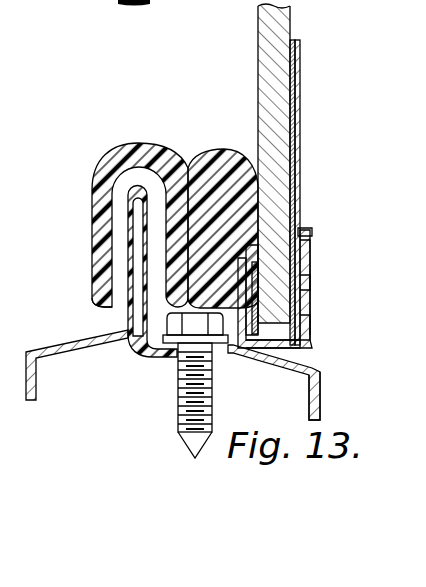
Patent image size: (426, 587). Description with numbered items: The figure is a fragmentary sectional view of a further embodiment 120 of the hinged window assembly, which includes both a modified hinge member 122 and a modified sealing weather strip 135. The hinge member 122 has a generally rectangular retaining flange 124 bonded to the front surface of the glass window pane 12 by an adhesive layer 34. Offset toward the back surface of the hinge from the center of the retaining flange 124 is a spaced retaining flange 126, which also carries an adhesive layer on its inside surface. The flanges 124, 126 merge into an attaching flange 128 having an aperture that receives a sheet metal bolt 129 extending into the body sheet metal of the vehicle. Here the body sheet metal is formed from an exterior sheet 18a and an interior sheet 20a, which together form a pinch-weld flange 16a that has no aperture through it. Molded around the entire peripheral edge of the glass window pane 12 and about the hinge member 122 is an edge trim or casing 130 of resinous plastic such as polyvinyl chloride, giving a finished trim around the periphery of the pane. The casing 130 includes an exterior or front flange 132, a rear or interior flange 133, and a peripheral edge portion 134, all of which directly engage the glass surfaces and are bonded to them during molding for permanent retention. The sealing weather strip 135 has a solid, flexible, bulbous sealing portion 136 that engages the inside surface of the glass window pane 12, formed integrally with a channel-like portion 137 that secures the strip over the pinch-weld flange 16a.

The glass window pane 12 is at (258, 32).
The adhesive layer 34 is at (300, 45).
The retaining flange 124 is at (300, 82).
The embodiment of the hinged window assembly 120 is at (365, 108).
The hinge member 122 is at (304, 206).
The spaced retaining flange 126 is at (252, 290).
The exterior or front flange 132 is at (312, 282).
The edge trim or casing 130 is at (312, 298).
The rear or interior flange 133 is at (308, 323).
The peripheral edge portion 134 is at (270, 346).
The sealing weather strip 135 is at (112, 144).
The bulbous sealing portion 136 is at (236, 118).
The pinch-weld flange 16a is at (138, 201).
The channel-like portion 137 is at (104, 309).
The interior sheet 20a is at (44, 340).
The sheet metal bolt 129 is at (178, 395).
The attaching flange 128 is at (222, 351).
The exterior sheet 18a is at (320, 393).